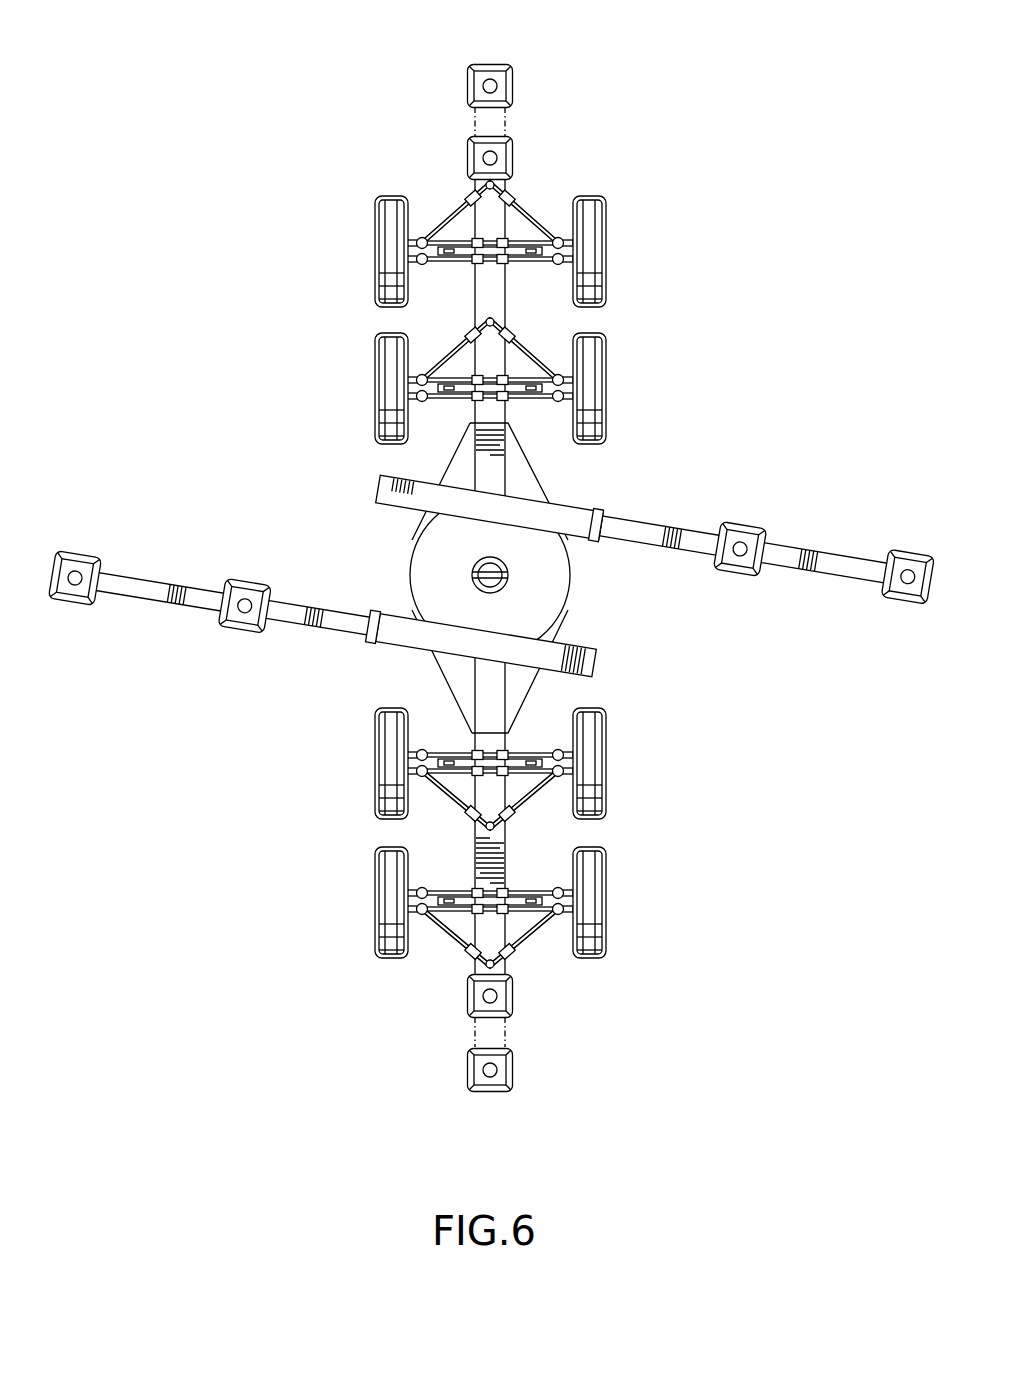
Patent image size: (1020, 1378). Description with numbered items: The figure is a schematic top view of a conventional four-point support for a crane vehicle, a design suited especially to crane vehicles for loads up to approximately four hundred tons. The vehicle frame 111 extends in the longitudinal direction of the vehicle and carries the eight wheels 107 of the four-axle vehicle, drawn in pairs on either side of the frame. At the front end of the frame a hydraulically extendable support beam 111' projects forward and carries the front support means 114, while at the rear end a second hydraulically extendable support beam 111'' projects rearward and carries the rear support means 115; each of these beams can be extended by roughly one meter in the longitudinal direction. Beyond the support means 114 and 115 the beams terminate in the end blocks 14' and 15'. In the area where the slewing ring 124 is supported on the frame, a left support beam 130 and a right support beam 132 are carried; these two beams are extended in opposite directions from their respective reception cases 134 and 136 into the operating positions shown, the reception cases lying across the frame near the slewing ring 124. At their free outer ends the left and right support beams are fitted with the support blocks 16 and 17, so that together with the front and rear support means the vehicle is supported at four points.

The front hitch coupling block 14' is at (523, 57).
The front support means 114 is at (480, 152).
The support beam 111' is at (552, 119).
The wheels 107 is at (590, 260).
The vehicle frame 111 is at (493, 577).
The reception case 136 is at (388, 487).
The right support beam 132 is at (636, 522).
The left coupling block 16 is at (83, 562).
The slewing ring 124 is at (425, 572).
The right coupling block 17 is at (903, 597).
The left support beam 130 is at (340, 625).
The reception case 134 is at (598, 667).
The rear support means 115 is at (477, 1002).
The support beam 111'' is at (542, 1026).
The rear hitch coupling block 15' is at (456, 1091).